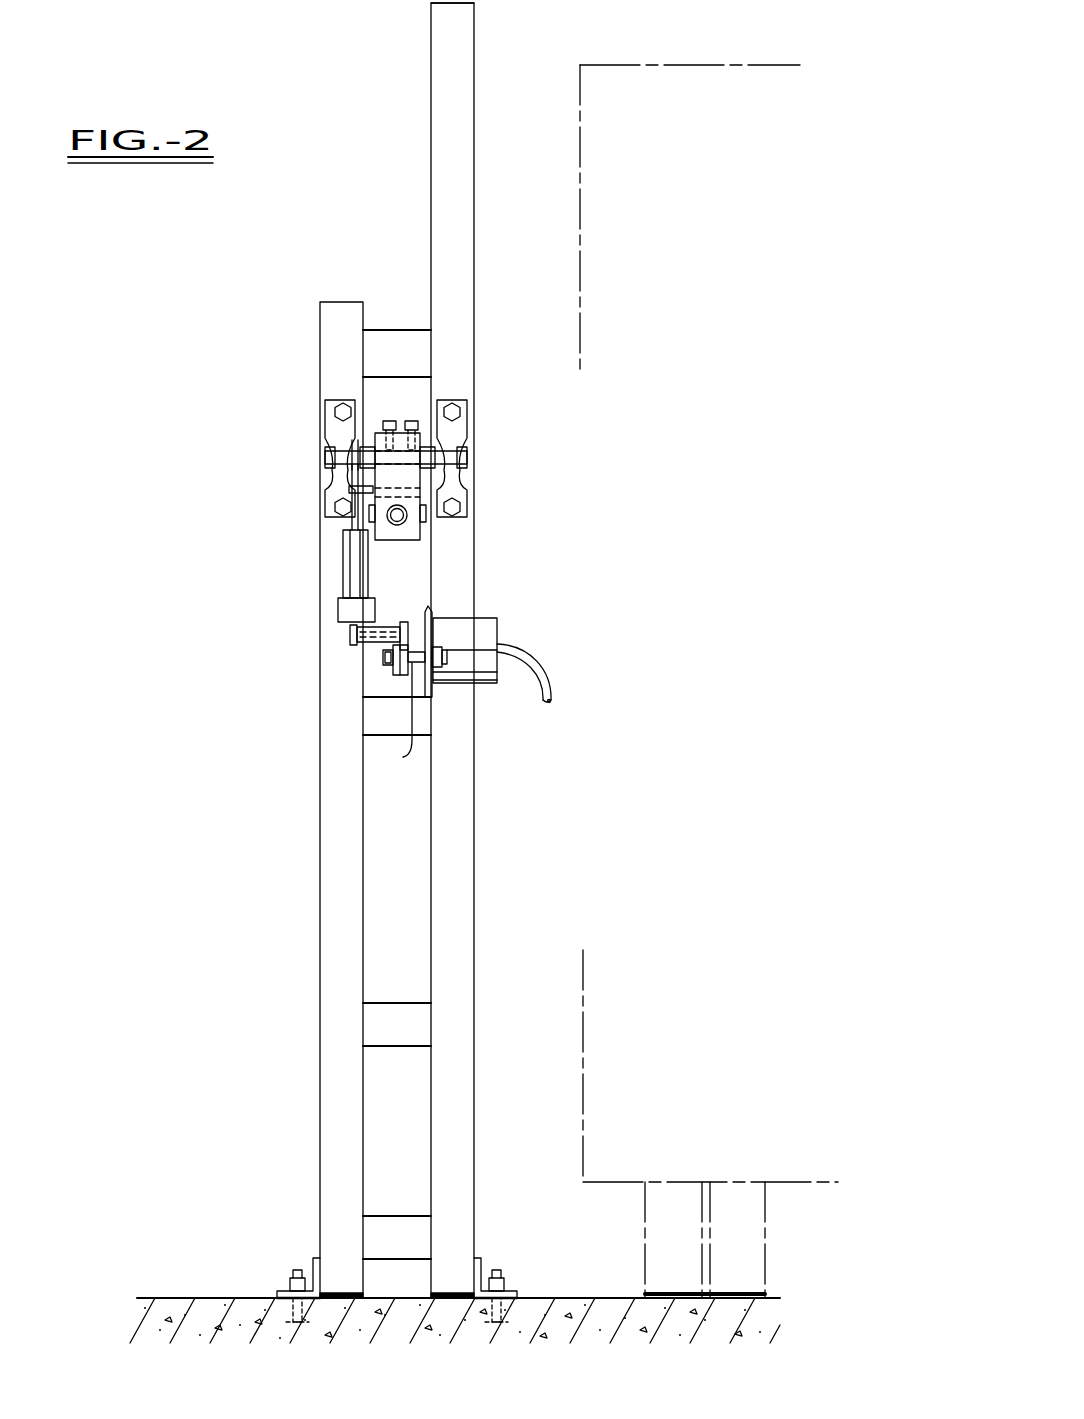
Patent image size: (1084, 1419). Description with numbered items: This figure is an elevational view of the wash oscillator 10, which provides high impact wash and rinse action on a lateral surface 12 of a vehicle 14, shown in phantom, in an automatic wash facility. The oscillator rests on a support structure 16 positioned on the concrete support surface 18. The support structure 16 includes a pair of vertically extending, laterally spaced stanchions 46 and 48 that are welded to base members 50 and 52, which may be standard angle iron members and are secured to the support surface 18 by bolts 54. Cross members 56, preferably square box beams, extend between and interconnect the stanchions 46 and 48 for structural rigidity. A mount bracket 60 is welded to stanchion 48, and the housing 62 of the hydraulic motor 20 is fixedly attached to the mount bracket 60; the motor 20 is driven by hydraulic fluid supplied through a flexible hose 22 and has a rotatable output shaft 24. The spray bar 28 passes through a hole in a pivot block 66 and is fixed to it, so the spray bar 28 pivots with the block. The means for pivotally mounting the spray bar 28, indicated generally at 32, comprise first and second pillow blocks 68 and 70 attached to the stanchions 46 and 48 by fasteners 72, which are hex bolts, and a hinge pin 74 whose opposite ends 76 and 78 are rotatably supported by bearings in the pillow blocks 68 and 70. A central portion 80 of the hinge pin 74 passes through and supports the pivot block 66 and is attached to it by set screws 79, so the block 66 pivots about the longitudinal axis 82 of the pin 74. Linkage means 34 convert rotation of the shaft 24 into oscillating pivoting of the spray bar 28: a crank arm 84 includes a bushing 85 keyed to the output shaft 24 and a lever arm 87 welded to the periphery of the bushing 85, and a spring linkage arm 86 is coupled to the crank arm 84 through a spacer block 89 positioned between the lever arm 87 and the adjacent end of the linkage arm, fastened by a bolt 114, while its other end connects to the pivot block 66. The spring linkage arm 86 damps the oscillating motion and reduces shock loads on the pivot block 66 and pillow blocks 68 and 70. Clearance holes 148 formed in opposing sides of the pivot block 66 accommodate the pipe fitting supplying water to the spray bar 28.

The wash oscillator 10 is at (178, 378).
The lateral surface 12 is at (580, 115).
The vehicle 14 is at (580, 60).
The support structure 16 is at (427, 42).
The support surface 18 is at (182, 1297).
The motor 20 is at (498, 628).
The flexible hose 22 is at (548, 683).
The shaft 24 is at (391, 715).
The spray bar 28 is at (405, 520).
The mounting means 32 is at (308, 438).
The linkage means 34 is at (333, 540).
The stanchion 46 is at (321, 304).
The stanchion 48 is at (434, 197).
The base member 50 is at (284, 1292).
The base member 52 is at (480, 1258).
The bolts 54 is at (297, 1277).
The cross members 56 is at (370, 352).
The mount bracket 60 is at (430, 697).
The housing 62 is at (437, 643).
The pivot block 66 is at (410, 535).
The first pillow block 68 is at (340, 430).
The second pillow block 70 is at (462, 432).
The fasteners 72 is at (341, 404).
The hinge pin 74 is at (468, 458).
The end 76 is at (325, 456).
The end 78 is at (470, 462).
The set screws 79 is at (412, 418).
The central portion 80 is at (368, 455).
The longitudinal axis 82 is at (330, 478).
The crank arm 84 is at (391, 658).
The bushing 85 is at (393, 668).
The spring linkage arm 86 is at (338, 576).
The lever arm 87 is at (420, 617).
The spacer block 89 is at (380, 636).
The bolt 114 is at (362, 630).
The clearance holes 148 is at (421, 508).